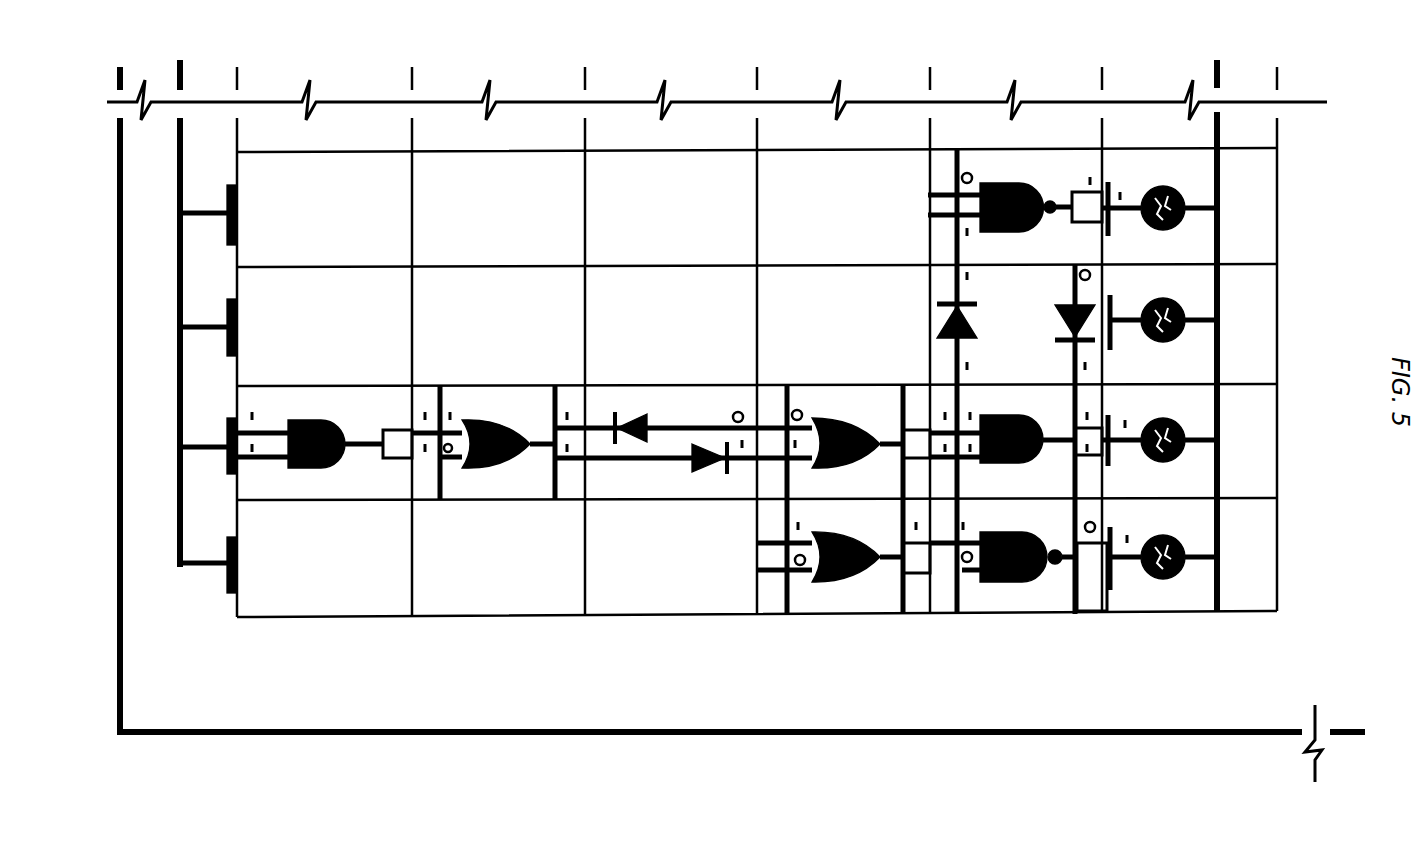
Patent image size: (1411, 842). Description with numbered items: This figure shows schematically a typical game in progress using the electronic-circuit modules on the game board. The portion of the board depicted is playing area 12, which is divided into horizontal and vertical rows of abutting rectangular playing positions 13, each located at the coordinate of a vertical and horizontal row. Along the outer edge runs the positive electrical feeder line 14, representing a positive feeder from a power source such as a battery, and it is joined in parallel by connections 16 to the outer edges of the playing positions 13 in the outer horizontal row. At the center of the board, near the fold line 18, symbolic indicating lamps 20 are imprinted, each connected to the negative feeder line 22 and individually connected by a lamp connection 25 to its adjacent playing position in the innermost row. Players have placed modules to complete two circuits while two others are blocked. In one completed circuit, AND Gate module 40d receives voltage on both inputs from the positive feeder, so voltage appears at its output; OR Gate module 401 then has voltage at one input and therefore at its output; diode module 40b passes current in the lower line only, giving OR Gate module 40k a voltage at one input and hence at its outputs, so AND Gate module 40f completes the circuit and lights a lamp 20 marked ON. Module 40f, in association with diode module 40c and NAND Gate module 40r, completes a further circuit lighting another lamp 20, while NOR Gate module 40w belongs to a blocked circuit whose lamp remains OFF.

The playing area 12 is at (887, 150).
The playing position 13 is at (390, 187).
The positive electrical feeder line 14 is at (178, 72).
The parallel connection 16 is at (218, 235).
The fold line 18 is at (1280, 717).
The indicating lamp 20 is at (1190, 430).
The negative feeder line 22 is at (1252, 55).
The lamp connection 25 is at (1135, 532).
The diode module 40b is at (715, 405).
The diode module 40c is at (1027, 290).
The AND Gate module 40d is at (338, 480).
The AND Gate module 40f is at (945, 410).
The OR Gate module 40k is at (843, 598).
The NAND Gate module 40r is at (1058, 163).
The NOR Gate module 40w is at (1020, 597).
The OR gate 401 is at (530, 478).